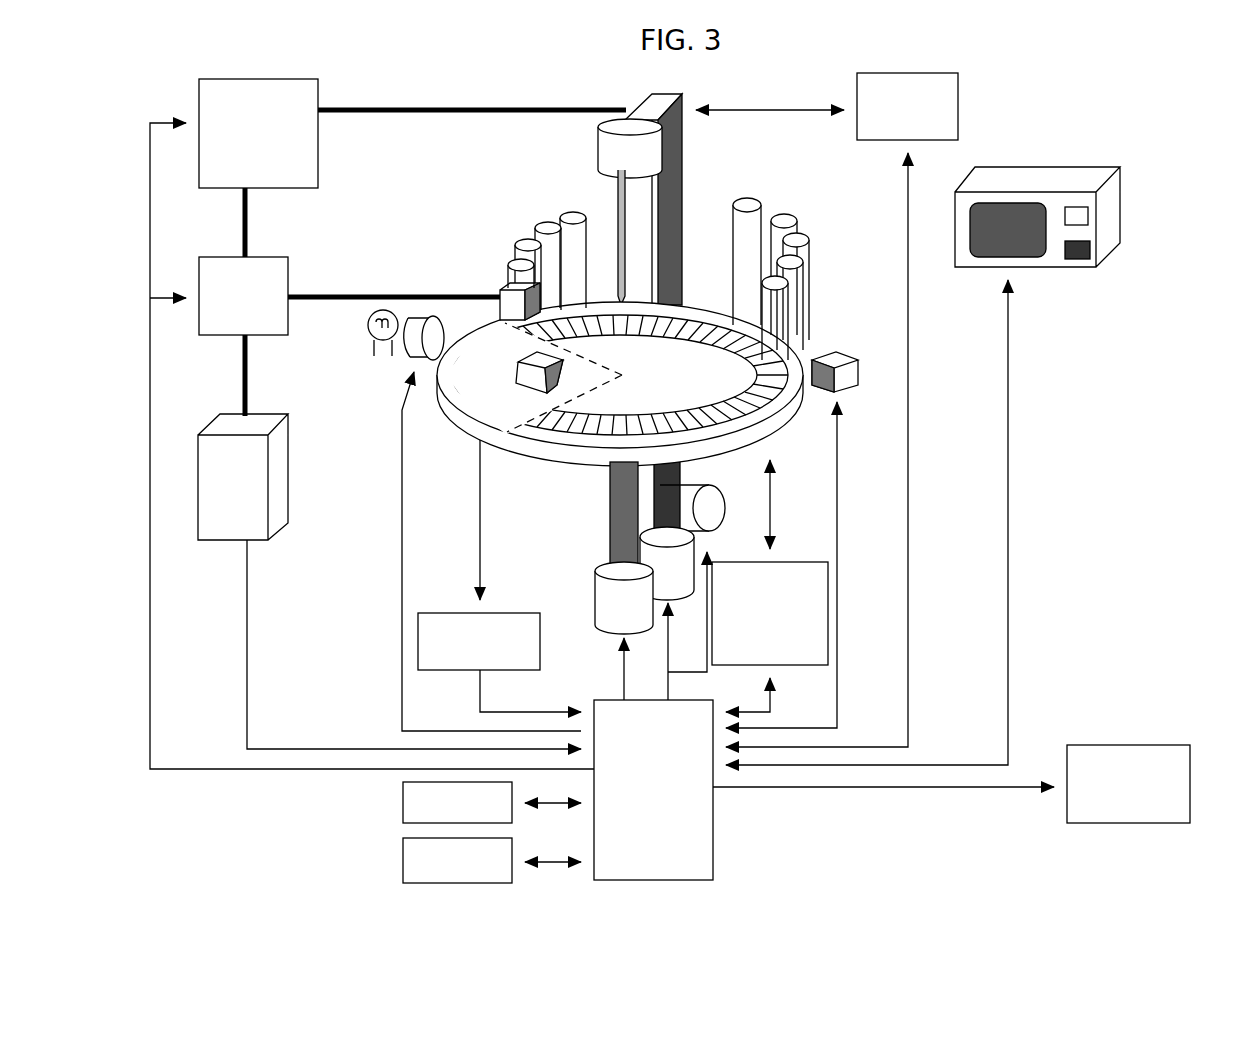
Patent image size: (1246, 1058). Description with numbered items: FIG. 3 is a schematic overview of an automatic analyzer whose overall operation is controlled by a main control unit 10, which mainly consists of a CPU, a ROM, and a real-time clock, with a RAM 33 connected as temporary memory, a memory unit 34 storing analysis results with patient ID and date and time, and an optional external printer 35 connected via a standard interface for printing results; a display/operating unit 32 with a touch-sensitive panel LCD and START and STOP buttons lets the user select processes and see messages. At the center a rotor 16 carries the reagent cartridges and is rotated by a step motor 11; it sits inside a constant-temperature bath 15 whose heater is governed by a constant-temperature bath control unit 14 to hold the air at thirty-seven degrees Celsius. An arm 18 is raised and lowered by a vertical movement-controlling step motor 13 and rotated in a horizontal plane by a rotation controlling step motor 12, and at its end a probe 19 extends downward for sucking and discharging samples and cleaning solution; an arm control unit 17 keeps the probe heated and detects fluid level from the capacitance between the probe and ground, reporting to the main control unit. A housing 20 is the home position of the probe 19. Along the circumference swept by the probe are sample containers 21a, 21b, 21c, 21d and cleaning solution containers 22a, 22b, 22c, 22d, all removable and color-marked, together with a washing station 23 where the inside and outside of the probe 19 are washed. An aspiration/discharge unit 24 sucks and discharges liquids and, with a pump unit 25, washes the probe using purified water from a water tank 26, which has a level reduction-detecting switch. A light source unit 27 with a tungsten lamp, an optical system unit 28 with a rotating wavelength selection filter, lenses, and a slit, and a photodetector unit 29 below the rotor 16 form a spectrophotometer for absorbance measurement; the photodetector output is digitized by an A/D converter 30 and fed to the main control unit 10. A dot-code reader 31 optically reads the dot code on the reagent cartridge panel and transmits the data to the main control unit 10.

The main control unit 10 is at (700, 800).
The step motor 11 is at (612, 602).
The rotation controlling step motor 12 is at (662, 560).
The vertical movement-controlling step motor 13 is at (708, 516).
The constant-temperature bath control unit 14 is at (828, 642).
The constant-temperature bath 15 is at (512, 466).
The rotor 16 is at (785, 396).
The arm control unit 17 is at (958, 116).
The arm 18 is at (648, 102).
The probe 19 is at (619, 216).
The housing 20 is at (750, 205).
The sample container 21a is at (778, 286).
The sample container 21b is at (795, 270).
The sample container 21c is at (800, 242).
The sample container 21d is at (790, 222).
The cleaning solution container 22a is at (520, 268).
The cleaning solution container 22b is at (530, 247).
The cleaning solution container 22c is at (548, 230).
The cleaning solution container 22d is at (575, 218).
The washing station 23 is at (510, 300).
The aspiration/discharge unit 24 is at (318, 182).
The pump unit 25 is at (272, 272).
The water tank 26 is at (280, 488).
The light source unit 27 is at (377, 333).
The optical system unit 28 is at (408, 358).
The photodetector unit 29 is at (516, 378).
The A/D converter 30 is at (418, 640).
The dot-code reader 31 is at (858, 378).
The display/operating unit 32 is at (1122, 206).
The RAM 33 is at (410, 800).
The memory unit 34 is at (410, 853).
The external printer 35 is at (1170, 748).